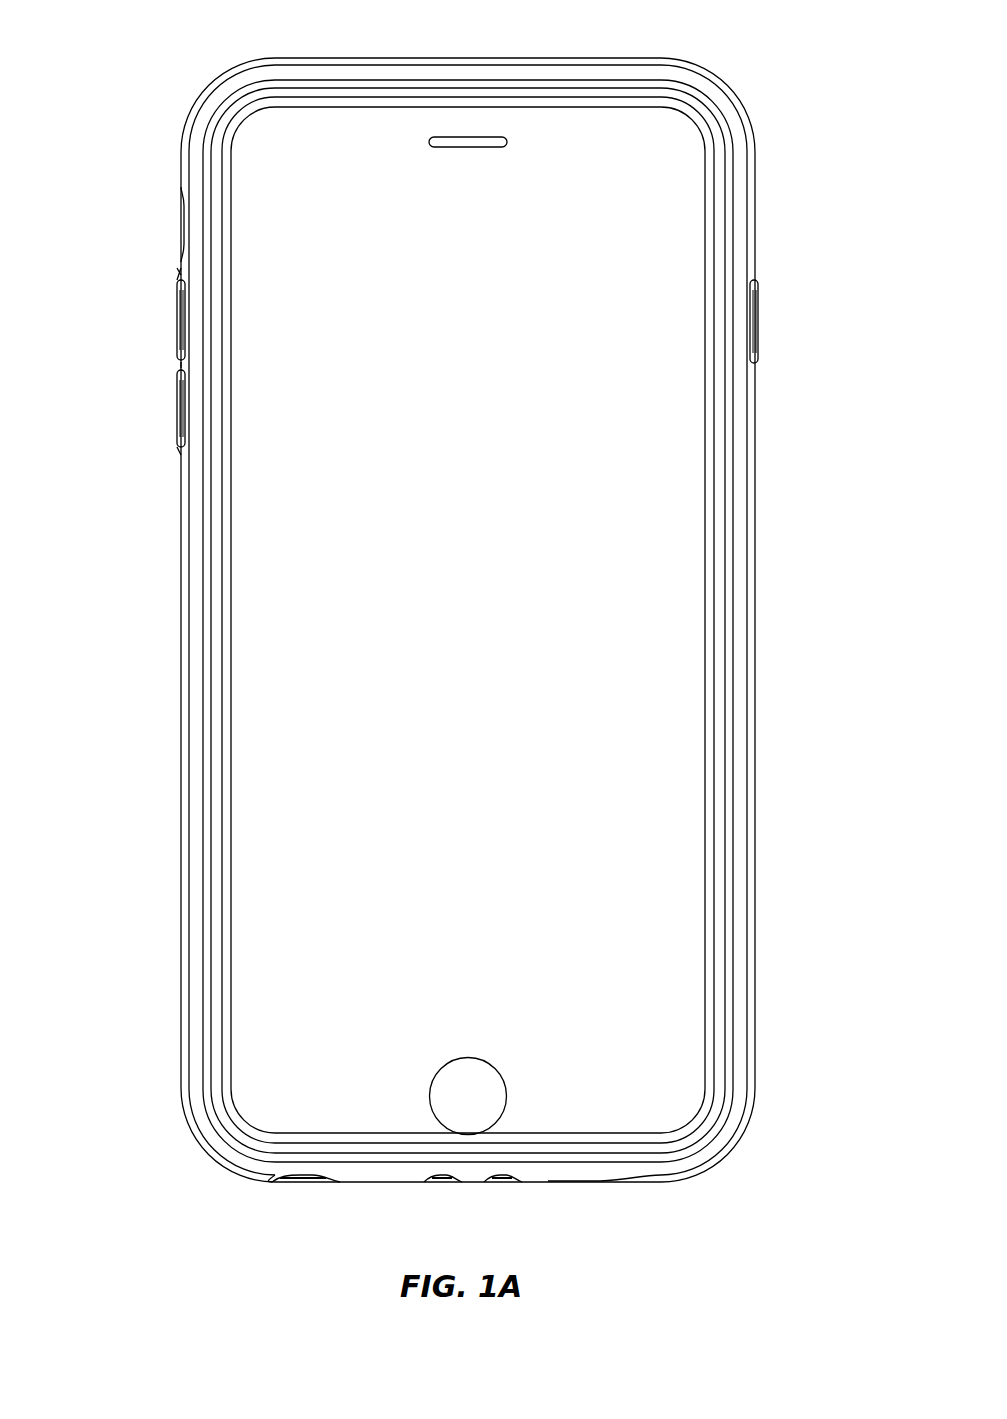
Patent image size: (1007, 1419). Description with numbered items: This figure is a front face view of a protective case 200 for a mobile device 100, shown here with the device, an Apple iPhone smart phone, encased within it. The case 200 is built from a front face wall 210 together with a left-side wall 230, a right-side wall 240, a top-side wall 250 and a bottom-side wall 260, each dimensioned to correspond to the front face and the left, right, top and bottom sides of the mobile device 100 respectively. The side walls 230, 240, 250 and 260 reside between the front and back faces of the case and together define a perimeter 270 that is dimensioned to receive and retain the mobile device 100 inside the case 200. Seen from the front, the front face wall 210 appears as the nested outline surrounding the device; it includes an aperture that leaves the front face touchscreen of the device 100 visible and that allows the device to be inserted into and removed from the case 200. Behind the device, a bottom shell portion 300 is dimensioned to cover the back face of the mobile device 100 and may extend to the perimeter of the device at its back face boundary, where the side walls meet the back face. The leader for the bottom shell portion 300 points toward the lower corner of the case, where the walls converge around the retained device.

The mobile device 100 is at (489, 634).
The protective case 200 is at (146, 845).
The front face wall 210 is at (728, 878).
The left-side wall 230 is at (181, 686).
The right-side wall 240 is at (755, 690).
The top-side wall 250 is at (403, 58).
The bottom-side wall 260 is at (368, 1183).
The perimeter 270 is at (728, 85).
The bottom shell portion 300 is at (713, 1138).